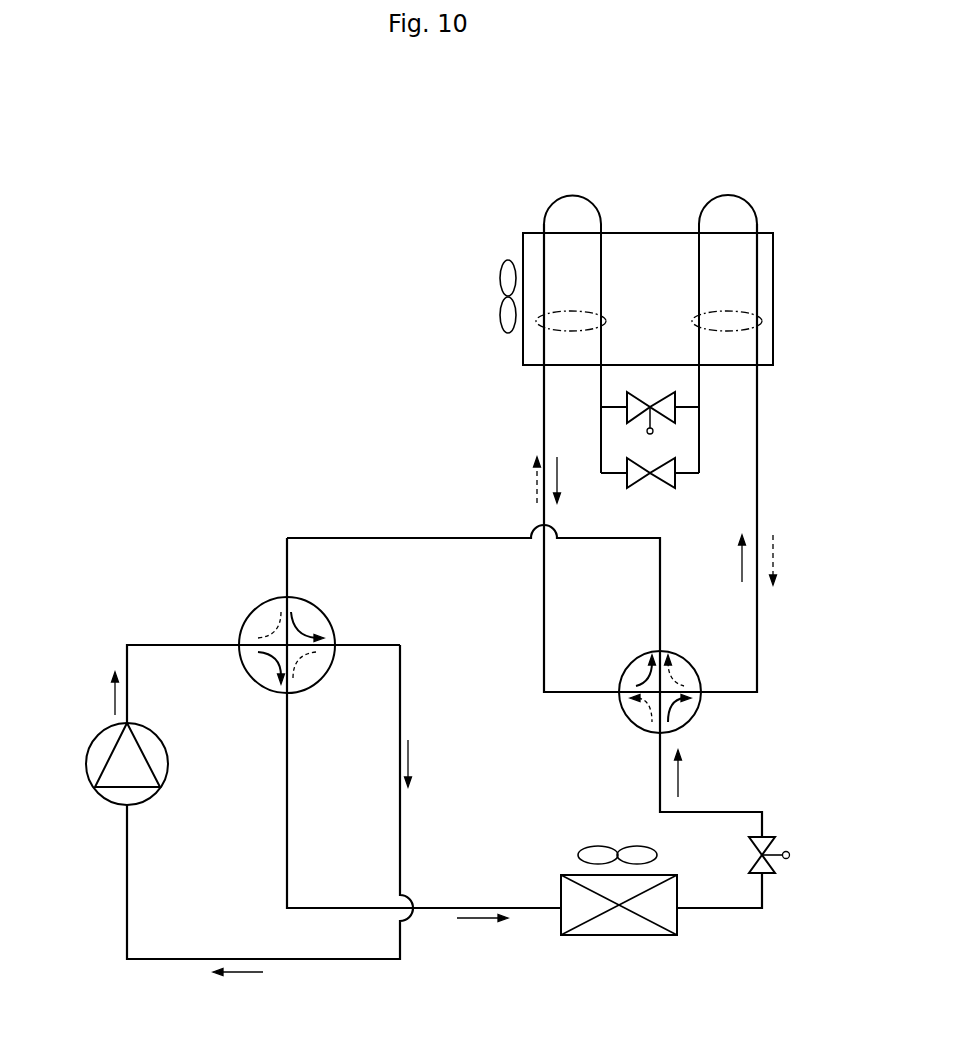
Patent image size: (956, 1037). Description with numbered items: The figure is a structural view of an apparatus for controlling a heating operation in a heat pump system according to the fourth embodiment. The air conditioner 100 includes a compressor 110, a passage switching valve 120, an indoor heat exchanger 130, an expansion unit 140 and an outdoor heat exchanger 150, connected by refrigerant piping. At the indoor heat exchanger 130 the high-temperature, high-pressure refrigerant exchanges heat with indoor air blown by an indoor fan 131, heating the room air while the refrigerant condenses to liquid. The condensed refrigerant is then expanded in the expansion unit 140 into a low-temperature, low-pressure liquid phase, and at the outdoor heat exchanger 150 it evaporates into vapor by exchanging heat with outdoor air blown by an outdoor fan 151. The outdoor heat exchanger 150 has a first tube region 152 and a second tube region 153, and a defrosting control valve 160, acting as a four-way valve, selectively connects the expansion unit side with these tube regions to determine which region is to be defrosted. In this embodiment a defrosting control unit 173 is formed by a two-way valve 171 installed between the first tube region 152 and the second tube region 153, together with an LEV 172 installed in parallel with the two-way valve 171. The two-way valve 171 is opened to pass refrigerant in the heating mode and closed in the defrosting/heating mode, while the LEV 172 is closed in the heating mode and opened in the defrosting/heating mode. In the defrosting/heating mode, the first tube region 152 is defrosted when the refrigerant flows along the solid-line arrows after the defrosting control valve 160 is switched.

The air conditioner 100 is at (256, 221).
The compressor 110 is at (102, 743).
The passage switching valve 120 is at (257, 613).
The indoor heat exchanger 130 is at (623, 925).
The indoor fan 131 is at (598, 846).
The expansion unit 140 is at (770, 833).
The outdoor heat exchanger 150 is at (775, 315).
The outdoor fan 151 is at (500, 312).
The first tube region 152 is at (727, 310).
The second tube region 153 is at (571, 310).
The defrosting control valve 160 is at (693, 717).
The two-way valve 171 is at (677, 480).
The LEV 172 is at (677, 418).
The defrosting control unit 173 is at (803, 408).